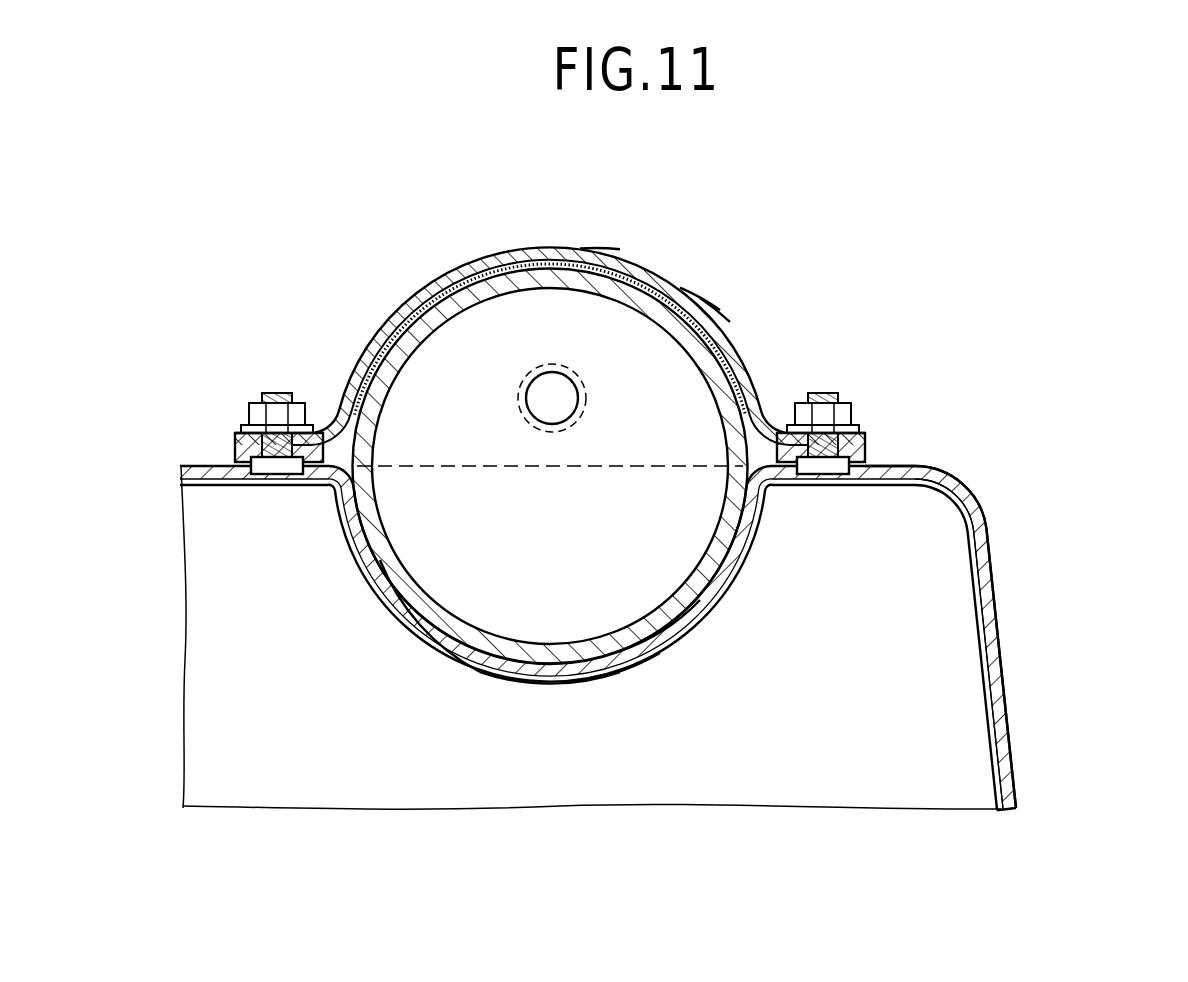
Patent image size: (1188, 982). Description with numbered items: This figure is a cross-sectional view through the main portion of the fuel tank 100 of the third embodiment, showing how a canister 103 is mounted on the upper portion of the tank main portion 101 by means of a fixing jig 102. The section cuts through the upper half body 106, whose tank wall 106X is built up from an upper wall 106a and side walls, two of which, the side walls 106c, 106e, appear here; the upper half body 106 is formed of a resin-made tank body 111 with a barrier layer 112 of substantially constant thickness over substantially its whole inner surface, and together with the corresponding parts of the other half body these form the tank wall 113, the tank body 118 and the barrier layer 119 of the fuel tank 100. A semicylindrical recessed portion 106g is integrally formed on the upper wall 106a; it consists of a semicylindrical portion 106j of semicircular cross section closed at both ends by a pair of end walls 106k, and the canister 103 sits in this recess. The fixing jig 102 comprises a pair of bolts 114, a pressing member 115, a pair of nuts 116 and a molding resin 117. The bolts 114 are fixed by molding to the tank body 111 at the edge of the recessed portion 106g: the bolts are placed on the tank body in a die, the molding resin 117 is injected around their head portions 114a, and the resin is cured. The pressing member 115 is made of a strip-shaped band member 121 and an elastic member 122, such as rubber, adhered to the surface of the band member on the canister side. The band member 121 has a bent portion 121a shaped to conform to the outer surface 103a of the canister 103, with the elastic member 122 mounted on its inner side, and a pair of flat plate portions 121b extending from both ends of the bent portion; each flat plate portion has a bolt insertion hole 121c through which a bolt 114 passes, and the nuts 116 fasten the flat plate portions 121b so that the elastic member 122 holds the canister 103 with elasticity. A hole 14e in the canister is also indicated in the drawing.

The fuel tank 100 is at (328, 208).
The tank main portion 101 is at (195, 462).
The fixing jig 102 is at (372, 342).
The canister 103 is at (503, 333).
The outer surface of the canister 103a is at (515, 265).
The pipe hole 14e is at (515, 392).
The band member 121 is at (648, 262).
The bent portion 121a is at (600, 258).
The flat plate portions 121b is at (330, 432).
The bolt insertion hole 121c is at (271, 430).
The pressing member 115 is at (705, 305).
The elastic member 122 is at (717, 340).
The bolts 114 is at (288, 392).
The head portions 114a is at (272, 476).
The nuts 116 is at (257, 415).
The molding resin 117 is at (228, 455).
The upper half body 106 is at (1003, 460).
The upper wall 106a is at (882, 463).
The tank wall 106X is at (966, 507).
The side wall 106c is at (520, 787).
The side wall 106e is at (1014, 760).
The recessed portion 106g is at (443, 658).
The semicylindrical portion 106j is at (607, 683).
The end walls 106k is at (663, 557).
The tank body 111 is at (993, 588).
The barrier layer 112 is at (982, 678).
The tank wall 113 is at (962, 490).
The tank body 118 is at (1020, 560).
The barrier layer 119 is at (1020, 635).